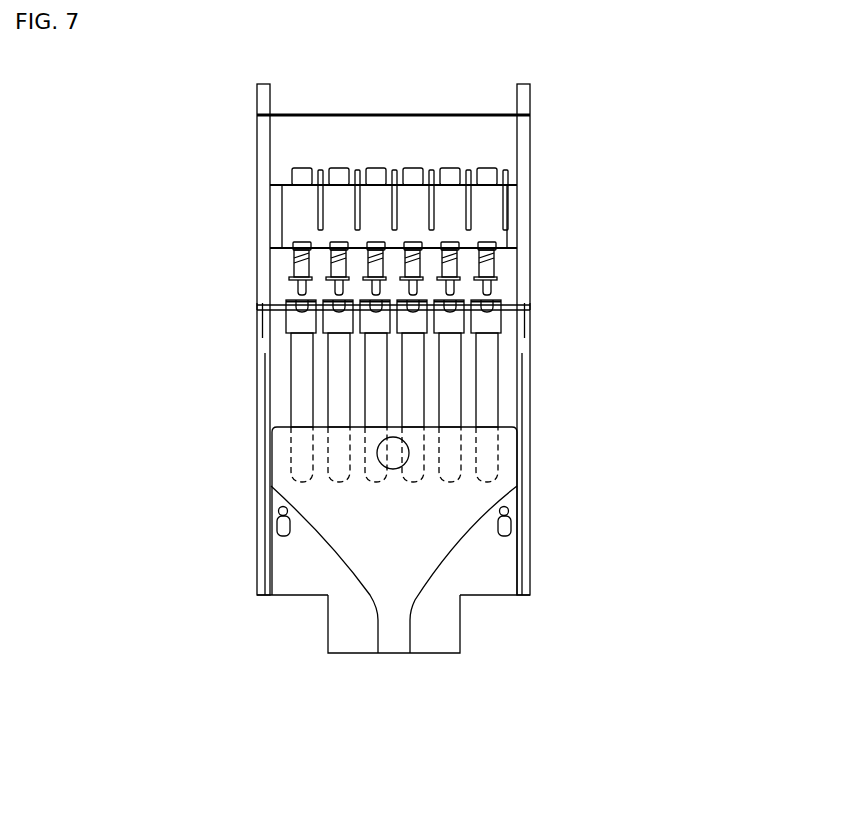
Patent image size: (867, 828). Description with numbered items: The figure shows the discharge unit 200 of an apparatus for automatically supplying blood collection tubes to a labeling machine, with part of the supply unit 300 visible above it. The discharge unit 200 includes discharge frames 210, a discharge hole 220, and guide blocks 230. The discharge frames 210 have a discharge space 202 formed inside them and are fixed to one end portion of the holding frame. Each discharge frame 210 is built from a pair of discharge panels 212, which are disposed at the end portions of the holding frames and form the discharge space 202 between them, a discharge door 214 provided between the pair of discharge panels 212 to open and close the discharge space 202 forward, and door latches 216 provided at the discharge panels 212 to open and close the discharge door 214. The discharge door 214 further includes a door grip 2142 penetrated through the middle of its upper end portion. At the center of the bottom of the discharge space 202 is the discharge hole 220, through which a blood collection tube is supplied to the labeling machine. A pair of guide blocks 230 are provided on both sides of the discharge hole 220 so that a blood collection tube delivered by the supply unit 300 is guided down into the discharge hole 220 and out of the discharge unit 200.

The discharge unit 200 is at (553, 660).
The discharge frame 210 is at (677, 408).
The discharge panel 212 is at (530, 565).
The discharge door 214 is at (510, 452).
The door latch 216 is at (524, 515).
The door grip 2142 is at (377, 453).
The discharge space 202 is at (414, 542).
The discharge hole 220 is at (394, 643).
The guide block 230 is at (300, 583).
The supply unit 300 is at (274, 169).